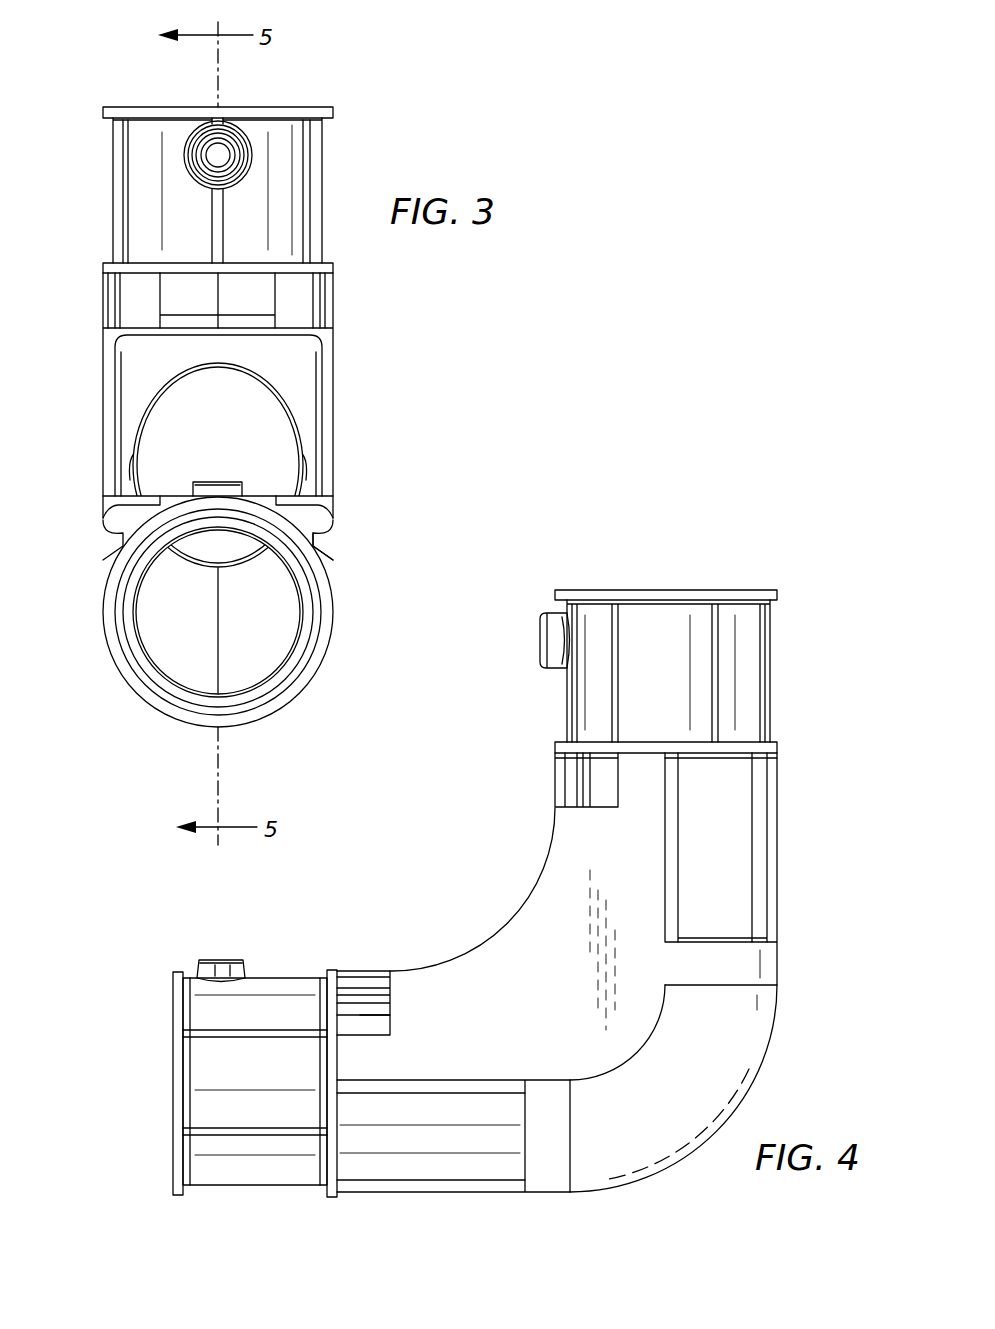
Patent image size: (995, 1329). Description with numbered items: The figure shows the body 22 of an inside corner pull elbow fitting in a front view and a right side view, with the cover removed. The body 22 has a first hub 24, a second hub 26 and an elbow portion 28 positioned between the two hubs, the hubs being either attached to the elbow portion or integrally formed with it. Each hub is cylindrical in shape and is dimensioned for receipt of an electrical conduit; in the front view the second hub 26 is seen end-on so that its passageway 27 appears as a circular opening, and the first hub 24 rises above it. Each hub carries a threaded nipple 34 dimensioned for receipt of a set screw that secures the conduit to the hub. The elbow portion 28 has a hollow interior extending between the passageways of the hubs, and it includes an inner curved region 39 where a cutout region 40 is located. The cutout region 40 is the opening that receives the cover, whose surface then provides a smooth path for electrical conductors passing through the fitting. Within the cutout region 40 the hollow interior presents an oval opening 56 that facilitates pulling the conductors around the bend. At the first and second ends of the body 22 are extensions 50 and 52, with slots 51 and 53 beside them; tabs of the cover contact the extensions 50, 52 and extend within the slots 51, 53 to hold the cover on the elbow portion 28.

In FIG. 3, the body 22 is at (438, 336).
In FIG. 4, the body 22 is at (806, 1036).
In FIG. 3, the first hub 24 is at (290, 172).
In FIG. 4, the first hub 24 is at (740, 668).
In FIG. 4, the second hub 26 is at (215, 1067).
In FIG. 3, the passageway 27 is at (257, 652).
In FIG. 4, the elbow portion 28 is at (577, 985).
In FIG. 3, the nipple 34 is at (216, 124).
In FIG. 4, the nipple 34 is at (543, 645).
In FIG. 3, the inner curved region 39 is at (96, 395).
In FIG. 3, the cutout region 40 is at (328, 415).
In FIG. 4, the cutout region 40 is at (500, 922).
In FIG. 3, the extension 50 is at (320, 297).
In FIG. 4, the extension 50 is at (572, 778).
In FIG. 4, the slot 51 is at (600, 784).
In FIG. 3, the extension 52 is at (106, 518).
In FIG. 4, the extension 52 is at (357, 990).
In FIG. 3, the slot 53 is at (330, 541).
In FIG. 4, the slot 53 is at (386, 1023).
In FIG. 3, the oval opening 56 is at (240, 368).